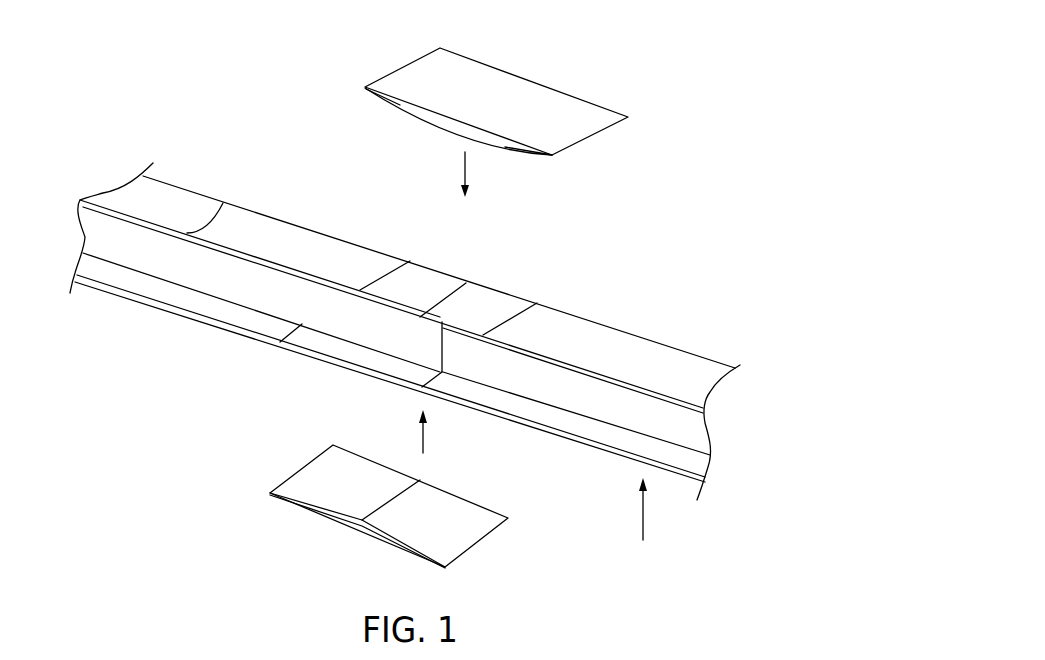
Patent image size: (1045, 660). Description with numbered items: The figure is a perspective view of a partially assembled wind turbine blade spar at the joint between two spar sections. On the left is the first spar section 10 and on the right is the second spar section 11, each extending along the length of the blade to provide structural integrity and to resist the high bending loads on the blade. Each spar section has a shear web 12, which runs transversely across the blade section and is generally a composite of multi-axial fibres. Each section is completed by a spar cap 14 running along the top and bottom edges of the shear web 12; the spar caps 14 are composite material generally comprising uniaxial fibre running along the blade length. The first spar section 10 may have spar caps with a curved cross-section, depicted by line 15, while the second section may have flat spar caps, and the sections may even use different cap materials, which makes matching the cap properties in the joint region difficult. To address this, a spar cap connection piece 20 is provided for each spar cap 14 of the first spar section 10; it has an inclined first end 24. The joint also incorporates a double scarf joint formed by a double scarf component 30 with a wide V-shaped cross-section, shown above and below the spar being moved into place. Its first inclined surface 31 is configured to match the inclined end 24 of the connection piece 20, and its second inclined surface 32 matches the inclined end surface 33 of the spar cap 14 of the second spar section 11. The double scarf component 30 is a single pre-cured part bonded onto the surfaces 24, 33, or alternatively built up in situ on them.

The first spar section 10 is at (233, 348).
The second spar section 11 is at (648, 519).
The shear web 12 is at (205, 287).
The spar cap 14 is at (177, 193).
The curved cross-section line 15 is at (218, 203).
The spar cap connection piece 20 is at (317, 240).
The first inclined end 24 is at (437, 278).
The double scarf component 30 is at (552, 100).
The first inclined surface 31 is at (413, 112).
The second inclined surface 32 is at (517, 147).
The inclined surface 33 is at (500, 298).